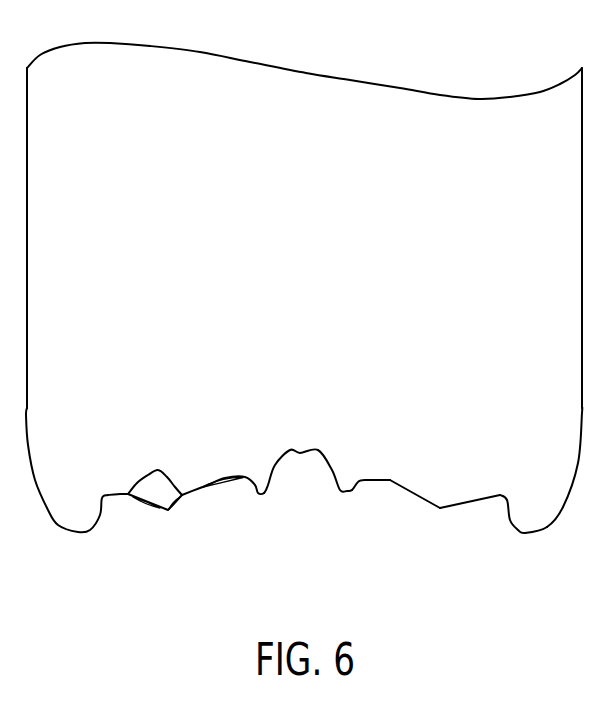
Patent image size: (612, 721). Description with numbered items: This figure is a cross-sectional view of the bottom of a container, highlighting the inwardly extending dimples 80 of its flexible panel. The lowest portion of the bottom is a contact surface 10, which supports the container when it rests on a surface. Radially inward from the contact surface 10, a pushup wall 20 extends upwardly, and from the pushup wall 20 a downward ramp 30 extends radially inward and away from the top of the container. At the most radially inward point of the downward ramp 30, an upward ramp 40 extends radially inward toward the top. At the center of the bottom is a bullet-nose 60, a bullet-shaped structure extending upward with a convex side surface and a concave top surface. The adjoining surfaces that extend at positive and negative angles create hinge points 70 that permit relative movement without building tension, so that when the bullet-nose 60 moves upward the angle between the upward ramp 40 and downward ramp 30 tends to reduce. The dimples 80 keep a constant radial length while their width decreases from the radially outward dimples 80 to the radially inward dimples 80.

The contact surface 10 is at (530, 543).
The pushup wall 20 is at (508, 522).
The downward ramp 30 is at (478, 497).
The upward ramp 40 is at (420, 500).
The bullet-nose 60 is at (305, 442).
The hinge points 70 is at (398, 465).
The dimples 80 is at (158, 470).